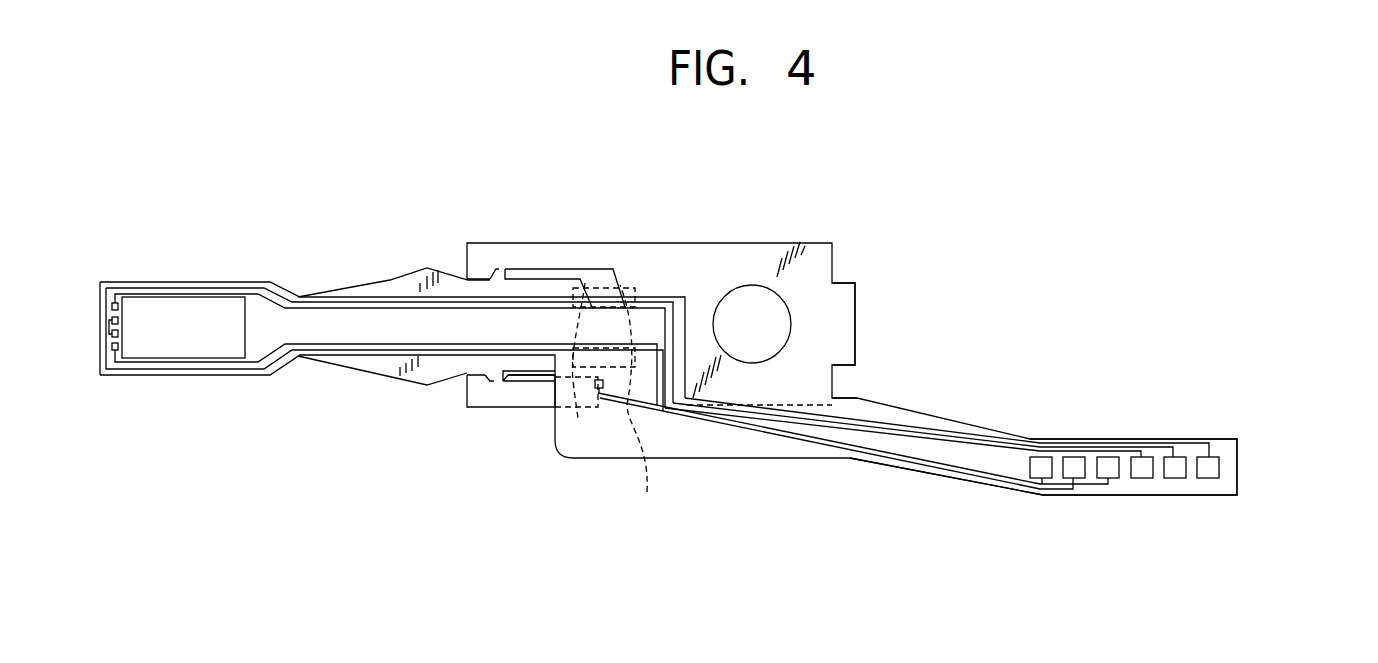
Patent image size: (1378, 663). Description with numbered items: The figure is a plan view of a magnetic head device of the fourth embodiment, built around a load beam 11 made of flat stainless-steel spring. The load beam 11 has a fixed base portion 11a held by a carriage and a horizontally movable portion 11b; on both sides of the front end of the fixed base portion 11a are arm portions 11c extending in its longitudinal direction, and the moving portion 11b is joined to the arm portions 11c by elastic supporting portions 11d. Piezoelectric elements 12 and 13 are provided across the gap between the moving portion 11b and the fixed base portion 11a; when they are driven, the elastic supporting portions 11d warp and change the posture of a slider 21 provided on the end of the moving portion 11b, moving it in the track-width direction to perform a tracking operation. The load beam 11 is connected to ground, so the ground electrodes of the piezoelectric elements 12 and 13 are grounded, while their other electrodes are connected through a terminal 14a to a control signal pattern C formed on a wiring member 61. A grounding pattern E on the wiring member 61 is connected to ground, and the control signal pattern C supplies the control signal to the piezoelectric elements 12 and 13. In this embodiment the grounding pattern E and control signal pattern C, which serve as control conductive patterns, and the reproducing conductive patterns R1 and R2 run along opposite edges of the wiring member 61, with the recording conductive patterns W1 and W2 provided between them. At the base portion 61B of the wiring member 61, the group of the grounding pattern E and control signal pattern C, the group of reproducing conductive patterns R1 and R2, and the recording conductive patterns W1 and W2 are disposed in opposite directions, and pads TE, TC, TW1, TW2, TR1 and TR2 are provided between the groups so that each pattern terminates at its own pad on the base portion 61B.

The load beam 11 is at (760, 244).
The fixed base portion 11a is at (822, 262).
The horizontally movable portion 11b is at (405, 290).
The arm portions 11c is at (560, 262).
The elastic supporting portions 11d is at (498, 276).
The piezoelectric element 12 is at (616, 283).
The piezoelectric element 13 is at (640, 405).
The terminal 14a is at (596, 390).
The slider 21 is at (190, 318).
The wiring member 61 is at (263, 318).
The base portion 61B is at (1238, 465).
The reproducing conductive pattern R1 is at (880, 421).
The reproducing conductive pattern R2 is at (937, 432).
The recording conductive pattern W1 is at (960, 466).
The recording conductive pattern W2 is at (1007, 470).
The grounding pattern E is at (858, 458).
The control signal pattern C is at (893, 466).
The pad TE is at (1043, 465).
The pad TC is at (1072, 465).
The pad TW1 is at (1140, 472).
The pad TW2 is at (1105, 472).
The pad TR1 is at (1205, 472).
The pad TR2 is at (1172, 472).